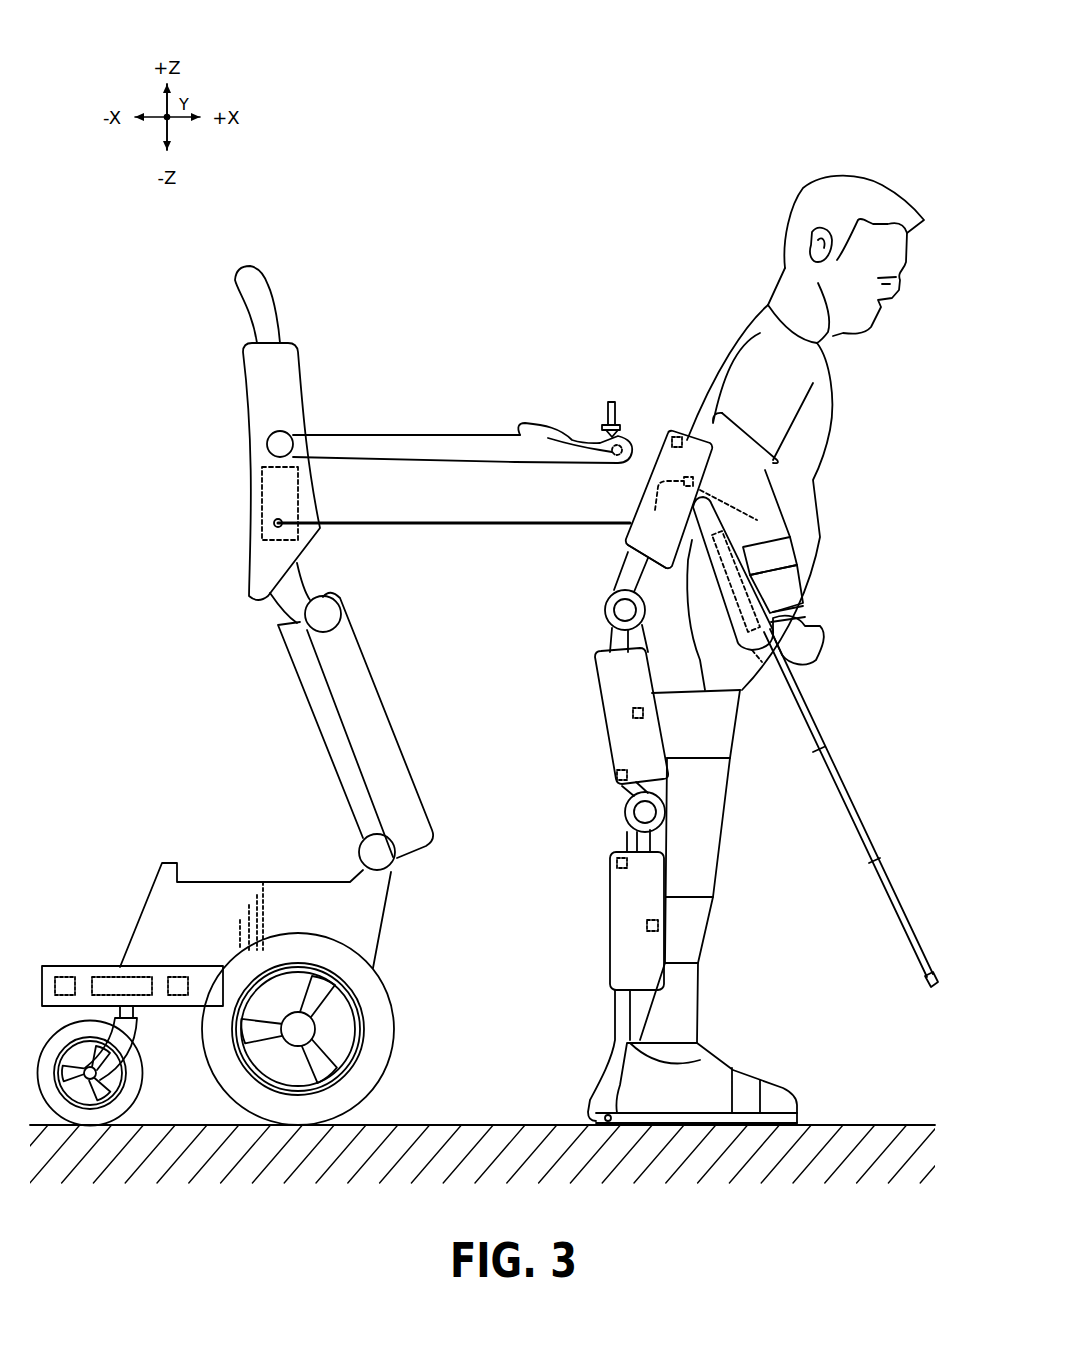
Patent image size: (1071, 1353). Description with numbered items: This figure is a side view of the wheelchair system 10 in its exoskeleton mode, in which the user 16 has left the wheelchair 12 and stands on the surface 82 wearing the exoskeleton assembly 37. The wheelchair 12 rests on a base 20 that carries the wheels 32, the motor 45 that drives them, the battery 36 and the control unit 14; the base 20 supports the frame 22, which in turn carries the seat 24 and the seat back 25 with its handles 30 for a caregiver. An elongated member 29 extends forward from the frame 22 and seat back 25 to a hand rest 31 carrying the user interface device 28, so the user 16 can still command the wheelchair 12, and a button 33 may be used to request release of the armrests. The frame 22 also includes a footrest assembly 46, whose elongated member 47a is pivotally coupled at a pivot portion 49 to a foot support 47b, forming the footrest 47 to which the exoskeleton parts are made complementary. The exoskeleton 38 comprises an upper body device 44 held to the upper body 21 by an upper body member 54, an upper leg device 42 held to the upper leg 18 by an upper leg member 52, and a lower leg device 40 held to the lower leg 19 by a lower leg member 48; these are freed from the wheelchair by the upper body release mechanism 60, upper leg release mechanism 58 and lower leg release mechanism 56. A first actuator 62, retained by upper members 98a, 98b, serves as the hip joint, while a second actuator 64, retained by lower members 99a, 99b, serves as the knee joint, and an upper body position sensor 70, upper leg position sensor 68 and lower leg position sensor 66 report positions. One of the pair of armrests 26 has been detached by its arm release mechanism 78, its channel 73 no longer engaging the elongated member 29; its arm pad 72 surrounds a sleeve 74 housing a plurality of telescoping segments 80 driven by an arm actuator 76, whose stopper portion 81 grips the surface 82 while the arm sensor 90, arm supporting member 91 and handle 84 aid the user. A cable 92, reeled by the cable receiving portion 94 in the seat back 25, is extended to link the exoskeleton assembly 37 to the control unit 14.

The wheelchair system 10 is at (715, 116).
The wheelchair 12 is at (330, 246).
The control unit 14 is at (67, 978).
The user 16 is at (720, 276).
The upper leg 18 is at (682, 977).
The lower leg 19 is at (693, 770).
The base 20 is at (120, 891).
The upper body 21 is at (820, 426).
The frame 22 is at (300, 742).
The seat 24 is at (362, 689).
The seat back 25 is at (290, 385).
The pair of armrests 26 is at (714, 630).
The user interface device 28 is at (605, 424).
The elongated member 29 is at (290, 456).
The handles 30 is at (245, 270).
The hand rest 31 is at (605, 460).
The wheels 32 is at (90, 1120).
The button 33 is at (617, 458).
The battery 36 is at (140, 1010).
The exoskeleton assembly 37 is at (920, 346).
The exoskeleton 38 is at (886, 826).
The lower leg device 40 is at (565, 931).
The upper leg device 42 is at (580, 729).
The upper body device 44 is at (655, 438).
The motor 45 is at (178, 977).
The footrest assembly 46 is at (565, 1092).
The footrest 47 is at (618, 1131).
The elongated member 47a is at (620, 1017).
The foot support 47b is at (680, 1127).
The lower leg member 48 is at (690, 937).
The pivot portion 49 is at (606, 1126).
The upper leg member 52 is at (715, 730).
The upper body member 54 is at (780, 550).
The lower leg release mechanism 56 is at (612, 870).
The upper leg release mechanism 58 is at (612, 775).
The upper body release mechanism 60 is at (675, 437).
The first actuator 62 is at (608, 608).
The second actuator 64 is at (630, 836).
The lower leg position sensor 66 is at (660, 926).
The upper leg position sensor 68 is at (640, 706).
The upper body position sensor 70 is at (665, 504).
The arm pad 72 is at (625, 541).
The channel 73 is at (730, 640).
The sleeve 74 is at (765, 665).
The arm actuator 76 is at (795, 619).
The arm release mechanism 78 is at (706, 598).
The plurality of telescoping segments 80 is at (882, 746).
The stopper portion 81 is at (930, 986).
The surface 82 is at (865, 1125).
The handle 84 is at (815, 630).
The arm sensor 90 is at (795, 610).
The arm supporting member 91 is at (785, 590).
The cable 92 is at (460, 530).
The cable receiving portion 94 is at (250, 546).
The upper member 98a is at (632, 556).
The upper member 98b is at (605, 646).
The lower member 99a is at (618, 790).
The lower member 99b is at (622, 846).